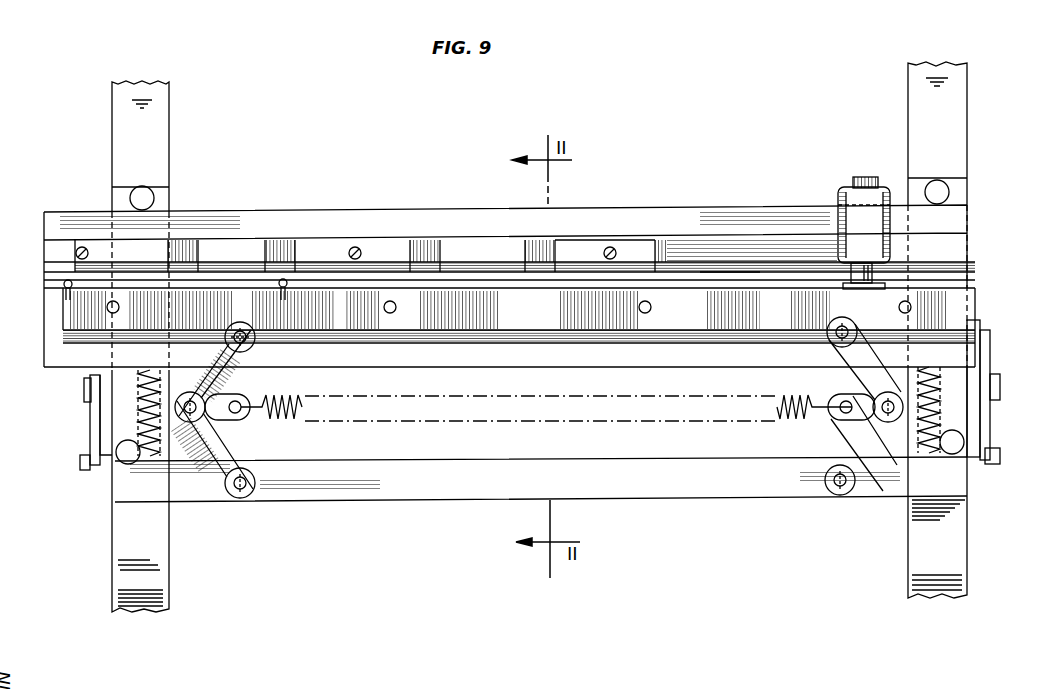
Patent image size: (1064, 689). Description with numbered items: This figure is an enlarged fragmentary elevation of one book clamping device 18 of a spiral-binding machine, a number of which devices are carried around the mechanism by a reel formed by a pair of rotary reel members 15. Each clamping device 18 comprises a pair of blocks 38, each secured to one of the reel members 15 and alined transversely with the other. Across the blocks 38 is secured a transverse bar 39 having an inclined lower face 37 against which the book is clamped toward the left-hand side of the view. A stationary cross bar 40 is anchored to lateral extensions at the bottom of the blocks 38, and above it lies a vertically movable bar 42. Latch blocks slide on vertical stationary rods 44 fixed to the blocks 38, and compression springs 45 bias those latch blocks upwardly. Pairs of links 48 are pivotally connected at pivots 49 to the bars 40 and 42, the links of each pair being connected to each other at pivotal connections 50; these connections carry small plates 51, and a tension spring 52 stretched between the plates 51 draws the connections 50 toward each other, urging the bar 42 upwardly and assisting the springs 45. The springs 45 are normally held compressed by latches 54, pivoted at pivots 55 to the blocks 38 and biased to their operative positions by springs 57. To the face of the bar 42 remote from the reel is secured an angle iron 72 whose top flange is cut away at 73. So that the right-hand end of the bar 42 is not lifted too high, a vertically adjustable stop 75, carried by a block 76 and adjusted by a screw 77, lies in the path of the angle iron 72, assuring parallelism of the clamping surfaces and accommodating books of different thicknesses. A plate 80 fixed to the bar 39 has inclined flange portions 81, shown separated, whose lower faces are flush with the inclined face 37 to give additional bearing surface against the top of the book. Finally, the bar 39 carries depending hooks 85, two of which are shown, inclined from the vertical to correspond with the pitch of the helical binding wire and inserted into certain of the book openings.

The rotary reel member 15 is at (160, 158).
The book clamping device 18 is at (746, 196).
The inclined lower face 37 is at (740, 276).
The block 38 is at (160, 204).
The transverse bar 39 is at (670, 210).
The stationary cross bar 40 is at (718, 488).
The vertically movable bar 42 is at (704, 348).
The vertical stationary rod 44 is at (138, 414).
The compression spring 45 is at (138, 424).
The link 48 is at (226, 464).
The pivotal connection 49 is at (250, 342).
The pivotal connection 50 is at (196, 406).
The small plate 51 is at (242, 404).
The tension spring 52 is at (792, 418).
The latch 54 is at (110, 407).
The pivot 55 is at (86, 386).
The spring 57 is at (88, 455).
The angle iron 72 is at (975, 292).
The cut-away portion 73 is at (536, 294).
The vertically adjustable stop 75 is at (882, 276).
The block 76 is at (848, 237).
The screw 77 is at (868, 184).
The plate 80 is at (468, 240).
The inclined flange portion 81 is at (520, 266).
The depending hook 85 is at (64, 289).